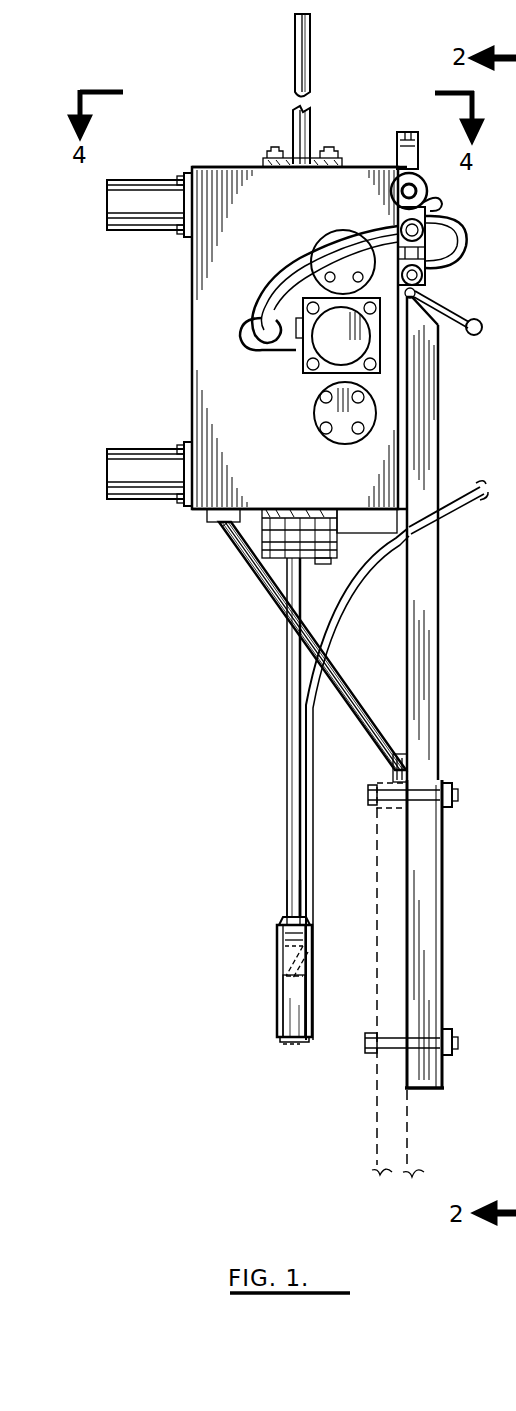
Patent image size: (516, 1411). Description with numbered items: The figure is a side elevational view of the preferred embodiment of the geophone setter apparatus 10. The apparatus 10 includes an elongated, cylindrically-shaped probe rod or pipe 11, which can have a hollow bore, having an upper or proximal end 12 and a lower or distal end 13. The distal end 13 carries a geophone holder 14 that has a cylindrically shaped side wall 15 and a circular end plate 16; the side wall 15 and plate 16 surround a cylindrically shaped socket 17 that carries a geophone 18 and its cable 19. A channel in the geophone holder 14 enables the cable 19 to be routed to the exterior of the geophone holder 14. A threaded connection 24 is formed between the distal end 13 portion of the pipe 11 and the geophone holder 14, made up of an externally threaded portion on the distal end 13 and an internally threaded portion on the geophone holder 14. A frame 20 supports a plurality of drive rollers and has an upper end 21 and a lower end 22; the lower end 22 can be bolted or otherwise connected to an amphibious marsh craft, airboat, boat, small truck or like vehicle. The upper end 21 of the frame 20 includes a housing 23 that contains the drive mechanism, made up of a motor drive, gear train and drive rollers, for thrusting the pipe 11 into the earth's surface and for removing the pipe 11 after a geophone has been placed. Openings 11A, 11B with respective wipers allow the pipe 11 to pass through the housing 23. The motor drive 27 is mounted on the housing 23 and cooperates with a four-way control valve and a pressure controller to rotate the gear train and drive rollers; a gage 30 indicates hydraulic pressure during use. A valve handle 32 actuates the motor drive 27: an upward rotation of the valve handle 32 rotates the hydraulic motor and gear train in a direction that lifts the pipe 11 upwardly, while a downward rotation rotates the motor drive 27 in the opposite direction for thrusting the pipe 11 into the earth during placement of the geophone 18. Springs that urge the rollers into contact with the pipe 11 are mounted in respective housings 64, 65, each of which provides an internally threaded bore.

The geophone setter apparatus 10 is at (233, 40).
The probe rod or pipe 11 is at (295, 49).
The opening 11A is at (290, 137).
The opening 11B is at (265, 585).
The upper or proximal end 12 is at (312, 18).
The lower or distal end 13 is at (293, 893).
The geophone holder 14 is at (278, 960).
The cylindrically shaped side wall 15 is at (279, 1006).
The circular end plate 16 is at (300, 977).
The cylindrically shaped socket 17 is at (299, 1022).
The geophone 18 is at (285, 1046).
The cable 19 is at (462, 498).
The frame 20 is at (441, 914).
The upper end 21 is at (428, 388).
The lower end 22 is at (442, 1087).
The housing 23 is at (281, 453).
The threaded connection 24 is at (281, 928).
The motor drive 27 is at (312, 346).
The gage 30 is at (353, 274).
The valve handle 32 is at (438, 300).
The housing 64 is at (152, 208).
The housing 65 is at (156, 468).